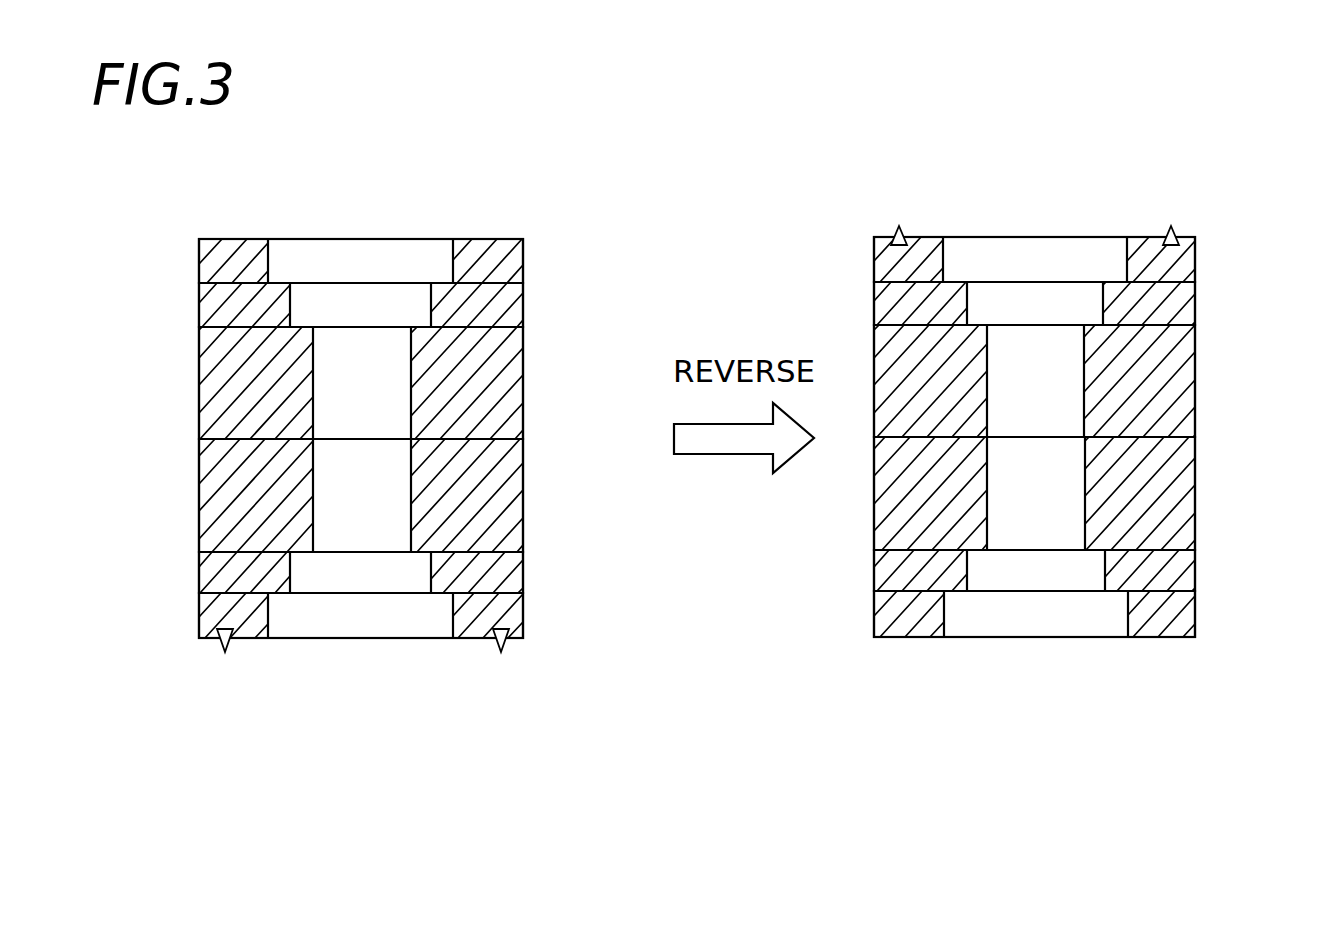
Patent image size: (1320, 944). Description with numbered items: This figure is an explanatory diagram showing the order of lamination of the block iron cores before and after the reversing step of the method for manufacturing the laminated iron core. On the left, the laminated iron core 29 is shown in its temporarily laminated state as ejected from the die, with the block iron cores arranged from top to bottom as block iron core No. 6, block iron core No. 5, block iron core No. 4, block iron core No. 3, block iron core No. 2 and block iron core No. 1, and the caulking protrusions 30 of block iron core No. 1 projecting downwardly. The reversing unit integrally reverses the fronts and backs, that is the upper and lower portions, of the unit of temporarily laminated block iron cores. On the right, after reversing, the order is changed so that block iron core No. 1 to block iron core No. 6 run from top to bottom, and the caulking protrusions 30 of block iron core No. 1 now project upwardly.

The laminated iron core 29 is at (490, 232).
The caulking protrusions 30 is at (229, 652).
The block iron core No. 1 is at (506, 620).
The block iron core No. 2 is at (506, 576).
The block iron core No. 3 is at (506, 499).
The block iron core No. 4 is at (506, 388).
The block iron core No. 5 is at (506, 311).
The block iron core No. 6 is at (506, 268).